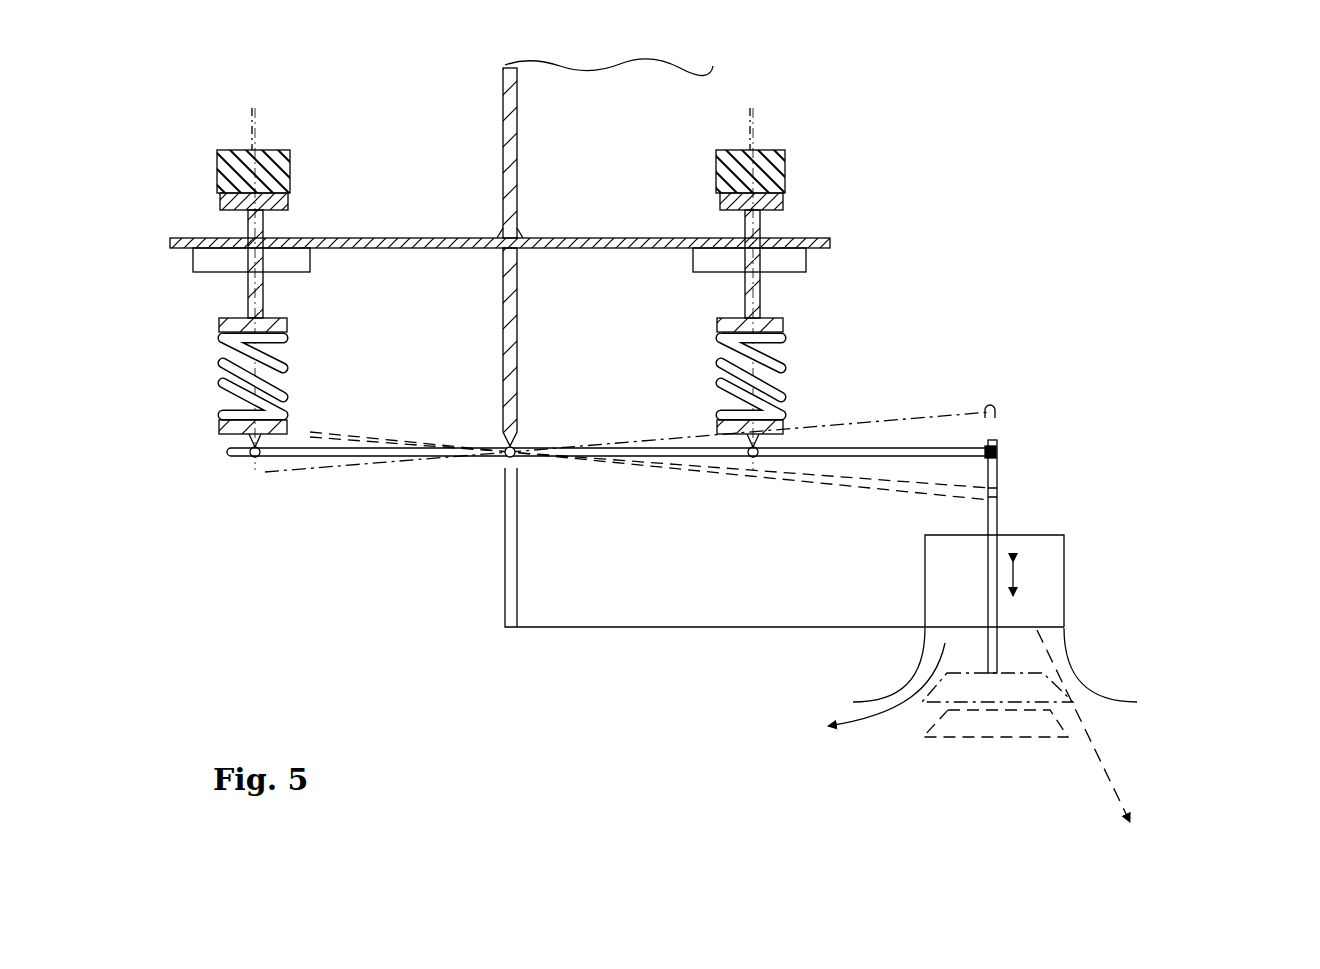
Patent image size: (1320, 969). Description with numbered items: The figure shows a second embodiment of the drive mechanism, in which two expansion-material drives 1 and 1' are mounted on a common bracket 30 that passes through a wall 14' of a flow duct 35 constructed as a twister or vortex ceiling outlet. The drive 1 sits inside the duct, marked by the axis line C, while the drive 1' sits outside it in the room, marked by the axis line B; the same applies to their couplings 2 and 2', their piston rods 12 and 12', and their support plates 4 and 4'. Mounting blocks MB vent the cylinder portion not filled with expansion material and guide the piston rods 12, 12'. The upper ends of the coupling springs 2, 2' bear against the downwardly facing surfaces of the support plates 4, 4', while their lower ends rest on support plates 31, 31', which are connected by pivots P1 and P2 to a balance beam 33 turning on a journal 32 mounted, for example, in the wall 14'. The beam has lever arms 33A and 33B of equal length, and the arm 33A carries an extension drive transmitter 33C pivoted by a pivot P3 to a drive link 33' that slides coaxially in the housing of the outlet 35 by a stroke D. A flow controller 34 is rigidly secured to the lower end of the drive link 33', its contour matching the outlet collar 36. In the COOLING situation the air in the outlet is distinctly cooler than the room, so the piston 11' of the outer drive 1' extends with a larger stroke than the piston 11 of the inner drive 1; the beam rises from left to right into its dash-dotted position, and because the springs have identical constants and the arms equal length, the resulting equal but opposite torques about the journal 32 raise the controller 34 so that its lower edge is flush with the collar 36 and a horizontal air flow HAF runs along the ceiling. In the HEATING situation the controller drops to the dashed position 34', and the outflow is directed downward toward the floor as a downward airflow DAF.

The drive 1 is at (759, 114).
The drive 1' is at (284, 104).
The piston 11 is at (830, 154).
The piston 11' is at (290, 190).
The piston rod 12 is at (847, 289).
The piston rod 12' is at (285, 289).
The coupling spring 2 is at (818, 376).
The coupling spring 2' is at (283, 376).
The support plate 4 is at (835, 298).
The support plate 4' is at (283, 325).
The common bracket 30 is at (588, 240).
The support plate 31 is at (795, 414).
The support plate 31' is at (222, 428).
The journal 32 is at (505, 458).
The balance beam 33 is at (607, 527).
The lever arm 33A is at (703, 455).
The lever arm 33B is at (308, 450).
The extension drive transmitter 33C is at (998, 445).
The drive link 33' is at (1068, 554).
The flow controller 34 is at (1106, 662).
The dashed line position of the controller 34' is at (974, 777).
The flow duct 35 is at (1092, 590).
The outlet collar 36 is at (1105, 697).
The wall 14' is at (717, 567).
The mounting blocks MB is at (308, 262).
The pivot P1 is at (753, 458).
The pivot P2 is at (248, 459).
The pivot P3 is at (998, 455).
The axis B is at (253, 133).
The axis C is at (748, 128).
The displacement D is at (1016, 575).
The horizontal air flow HAF is at (886, 703).
The downward airflow DAF is at (1112, 772).
The heating position of lever HEATING is at (867, 477).
The cooling position of lever COOLING is at (990, 405).